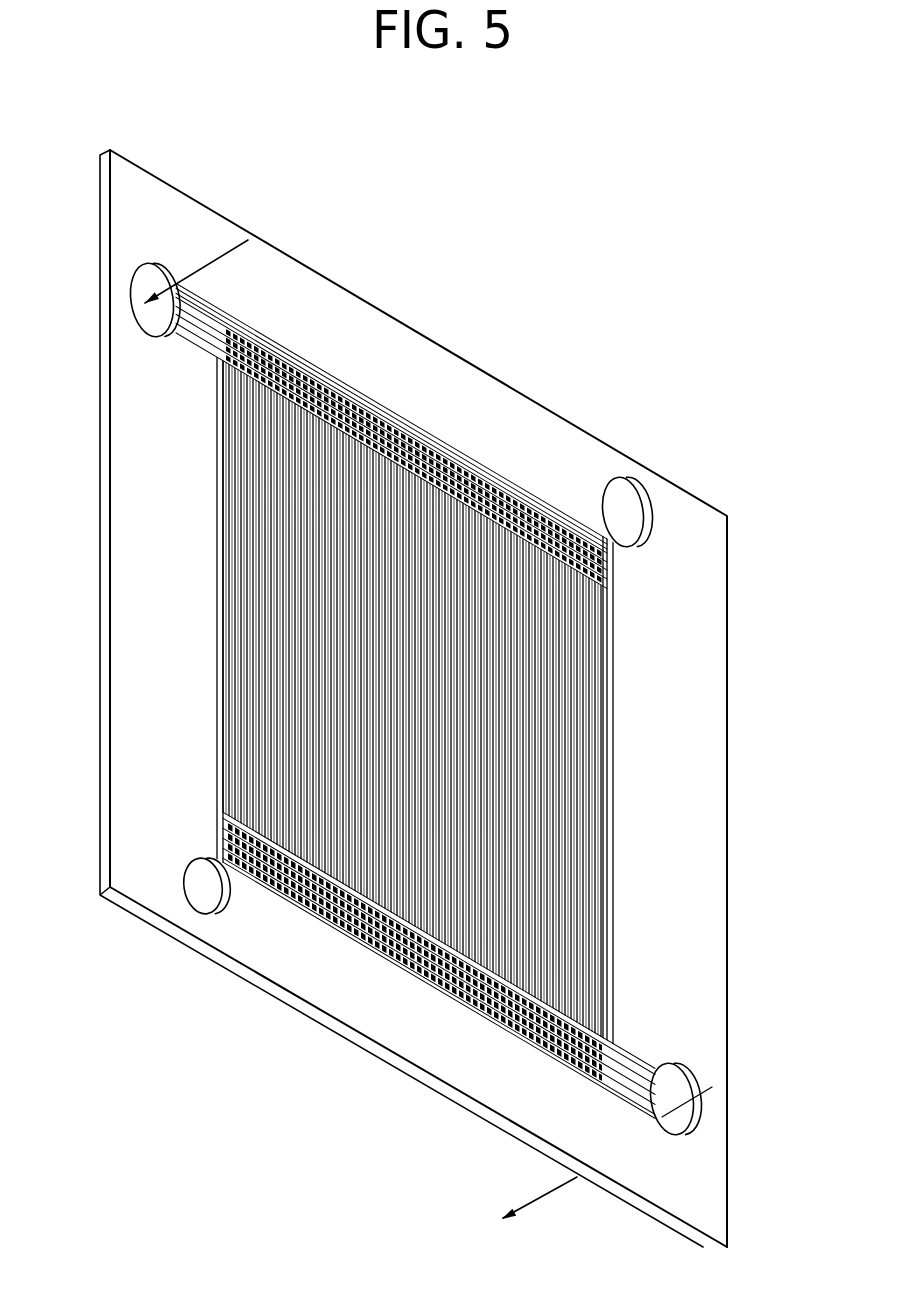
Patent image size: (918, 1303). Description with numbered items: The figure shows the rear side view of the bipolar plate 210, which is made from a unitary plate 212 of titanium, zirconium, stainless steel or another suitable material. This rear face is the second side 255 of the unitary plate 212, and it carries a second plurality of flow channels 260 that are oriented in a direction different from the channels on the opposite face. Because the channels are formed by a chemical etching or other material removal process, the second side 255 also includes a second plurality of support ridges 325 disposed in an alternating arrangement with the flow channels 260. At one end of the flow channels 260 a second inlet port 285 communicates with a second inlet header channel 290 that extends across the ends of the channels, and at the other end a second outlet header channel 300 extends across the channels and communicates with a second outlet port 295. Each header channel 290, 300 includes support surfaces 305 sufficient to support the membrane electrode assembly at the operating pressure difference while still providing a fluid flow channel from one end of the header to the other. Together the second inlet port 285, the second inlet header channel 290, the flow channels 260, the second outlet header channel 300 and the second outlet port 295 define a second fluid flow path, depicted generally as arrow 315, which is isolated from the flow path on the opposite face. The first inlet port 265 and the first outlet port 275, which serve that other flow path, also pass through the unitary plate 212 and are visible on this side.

The bipolar plate 210 is at (413, 698).
The unitary plate 212 is at (418, 698).
The second side 255 is at (263, 960).
The second plurality of flow channels 260 is at (600, 833).
The first inlet port 265 is at (655, 510).
The first outlet port 275 is at (200, 915).
The second inlet port 285 is at (148, 327).
The second outlet port 295 is at (685, 1135).
The second inlet header channel 290 is at (398, 418).
The second outlet header channel 300 is at (383, 950).
The support surface 305 is at (483, 477).
The second fluid flow path 315 is at (216, 259).
The second plurality of support ridges 325 is at (595, 692).